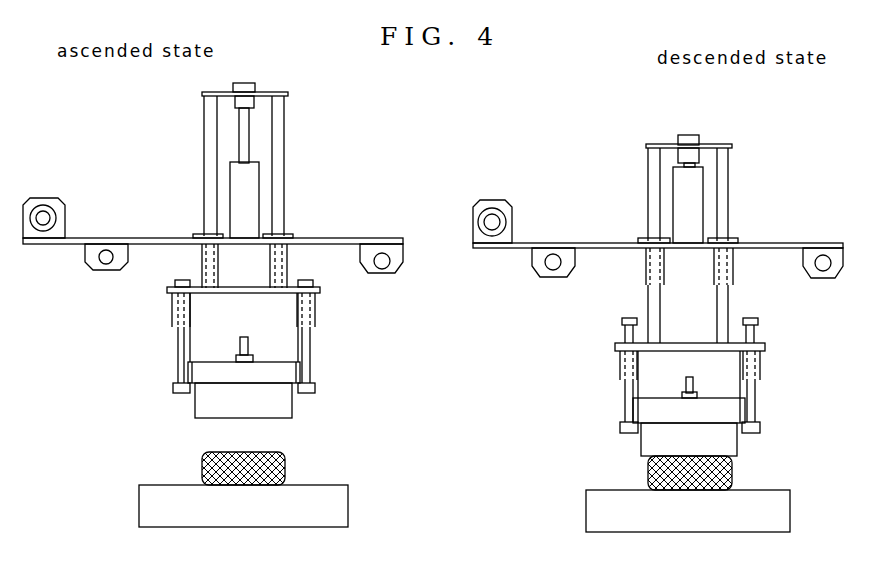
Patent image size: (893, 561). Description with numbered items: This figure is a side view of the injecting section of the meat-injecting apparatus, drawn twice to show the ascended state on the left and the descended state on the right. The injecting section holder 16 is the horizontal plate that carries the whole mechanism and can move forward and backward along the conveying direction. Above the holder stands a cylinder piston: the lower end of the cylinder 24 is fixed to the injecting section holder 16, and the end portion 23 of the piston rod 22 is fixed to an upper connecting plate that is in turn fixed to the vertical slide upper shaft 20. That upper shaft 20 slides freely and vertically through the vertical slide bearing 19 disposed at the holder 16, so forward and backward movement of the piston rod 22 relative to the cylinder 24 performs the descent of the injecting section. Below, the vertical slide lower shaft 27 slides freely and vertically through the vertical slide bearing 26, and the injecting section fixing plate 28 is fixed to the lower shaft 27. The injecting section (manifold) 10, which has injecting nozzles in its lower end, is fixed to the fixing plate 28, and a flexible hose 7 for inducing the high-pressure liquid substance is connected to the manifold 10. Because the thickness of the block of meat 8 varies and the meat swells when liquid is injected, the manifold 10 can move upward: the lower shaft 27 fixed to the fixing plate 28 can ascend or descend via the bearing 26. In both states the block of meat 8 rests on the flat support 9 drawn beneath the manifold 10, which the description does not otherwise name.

The flexible hose 7 is at (695, 387).
The block of meat 8 is at (287, 468).
The table 9 is at (348, 508).
The injecting section (manifold) 10 is at (292, 407).
The injecting section holder 16 is at (795, 245).
The vertical slide bearing 19 is at (287, 262).
The vertical slide upper shaft 20 is at (728, 168).
The piston rod 22 is at (238, 140).
The end portion 23 is at (690, 135).
The cylinder 24 is at (673, 192).
The vertical slide bearing 26 is at (760, 360).
The vertical slide lower shaft 27 is at (757, 405).
The injecting section fixing plate 28 is at (620, 430).